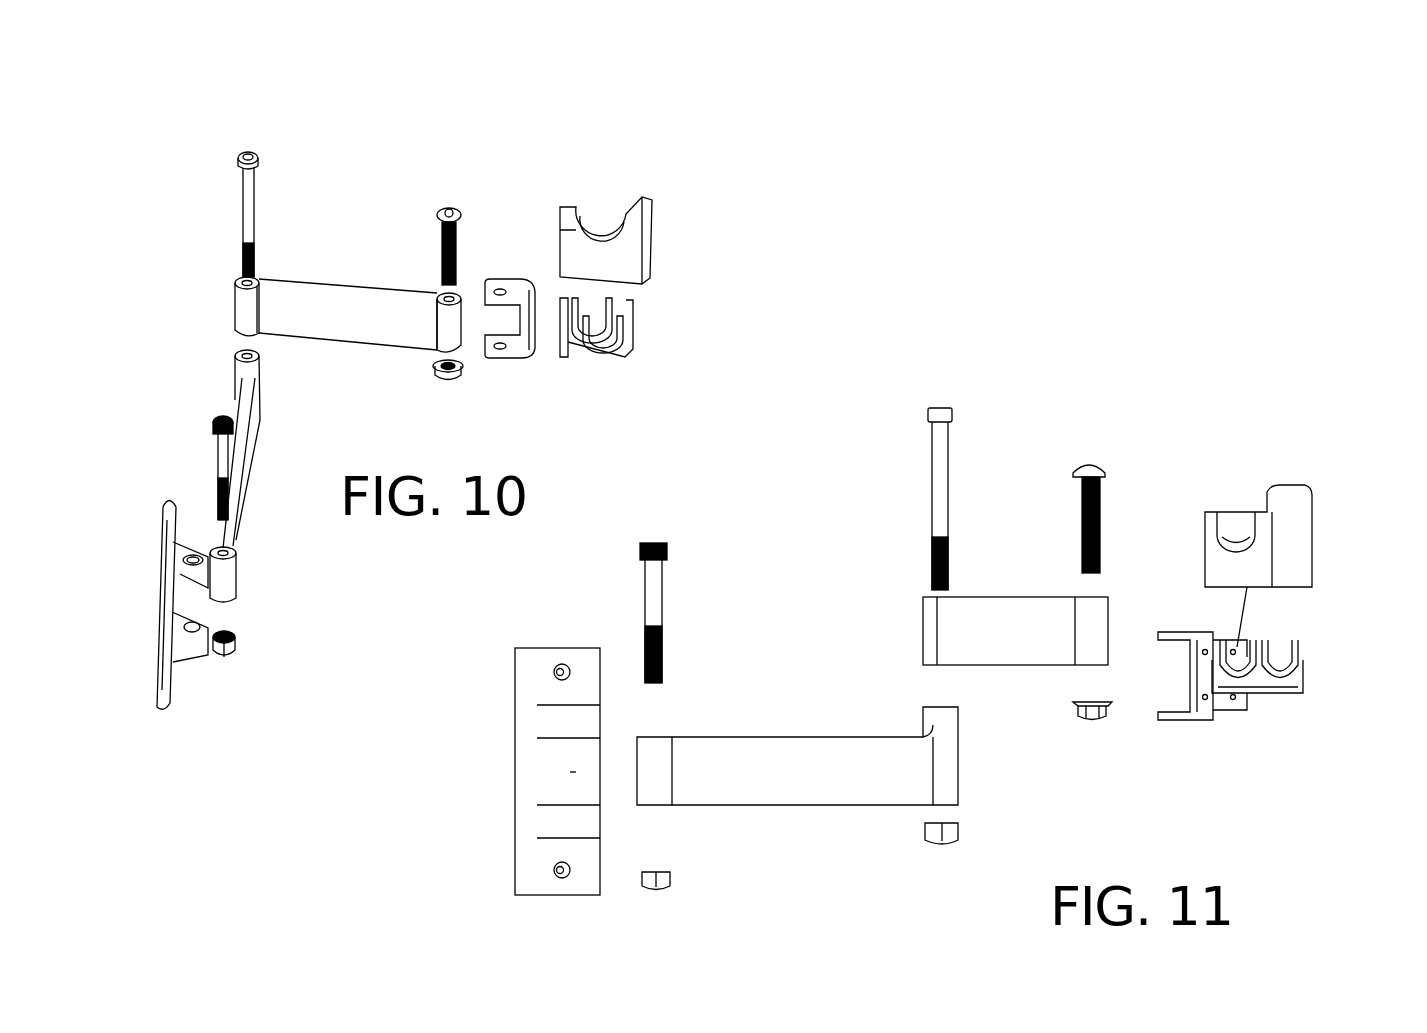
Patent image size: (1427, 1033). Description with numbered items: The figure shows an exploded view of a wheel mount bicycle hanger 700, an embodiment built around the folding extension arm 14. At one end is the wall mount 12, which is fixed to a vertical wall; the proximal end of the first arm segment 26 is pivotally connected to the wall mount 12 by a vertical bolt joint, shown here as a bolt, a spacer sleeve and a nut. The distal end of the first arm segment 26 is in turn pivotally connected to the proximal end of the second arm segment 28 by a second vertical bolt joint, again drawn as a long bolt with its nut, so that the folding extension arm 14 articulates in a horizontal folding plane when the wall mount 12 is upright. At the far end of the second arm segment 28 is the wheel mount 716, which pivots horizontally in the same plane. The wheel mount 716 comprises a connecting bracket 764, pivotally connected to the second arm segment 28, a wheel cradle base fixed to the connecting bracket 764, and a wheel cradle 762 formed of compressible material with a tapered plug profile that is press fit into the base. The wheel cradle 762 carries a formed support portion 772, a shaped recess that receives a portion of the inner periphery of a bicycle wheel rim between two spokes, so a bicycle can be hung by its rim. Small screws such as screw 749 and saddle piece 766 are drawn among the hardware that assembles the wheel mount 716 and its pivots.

In FIG. 10, the wheel mount bicycle hanger 700 is at (126, 116).
In FIG. 11, the wheel mount bicycle hanger 700 is at (833, 492).
In FIG. 10, the wall mount 12 is at (155, 617).
In FIG. 11, the wall mount 12 is at (535, 775).
In FIG. 10, the folding extension arm 14 is at (192, 327).
In FIG. 11, the folding extension arm 14 is at (910, 679).
In FIG. 10, the first arm segment 26 is at (252, 472).
In FIG. 11, the first arm segment 26 is at (817, 789).
In FIG. 10, the second arm segment 28 is at (353, 328).
In FIG. 11, the second arm segment 28 is at (1023, 639).
In FIG. 10, the screw 749 is at (450, 200).
In FIG. 11, the screw 749 is at (1090, 452).
In FIG. 10, the wheel cradle 762 is at (640, 256).
In FIG. 11, the wheel cradle 762 is at (1305, 532).
In FIG. 10, the connecting bracket 764 is at (513, 360).
In FIG. 11, the connecting bracket 764 is at (1205, 722).
In FIG. 10, the saddle clamp 766 is at (620, 348).
In FIG. 11, the saddle clamp 766 is at (1290, 672).
In FIG. 10, the formed support portion 772 is at (604, 250).
In FIG. 11, the formed support portion 772 is at (1240, 552).
In FIG. 10, the wheel mount 716 is at (574, 390).
In FIG. 11, the wheel mount 716 is at (1250, 740).